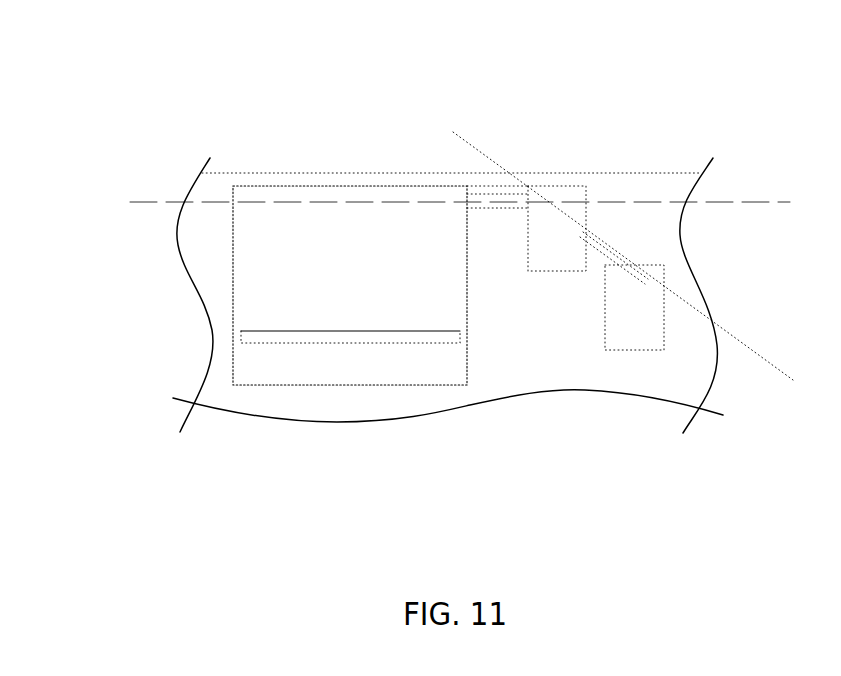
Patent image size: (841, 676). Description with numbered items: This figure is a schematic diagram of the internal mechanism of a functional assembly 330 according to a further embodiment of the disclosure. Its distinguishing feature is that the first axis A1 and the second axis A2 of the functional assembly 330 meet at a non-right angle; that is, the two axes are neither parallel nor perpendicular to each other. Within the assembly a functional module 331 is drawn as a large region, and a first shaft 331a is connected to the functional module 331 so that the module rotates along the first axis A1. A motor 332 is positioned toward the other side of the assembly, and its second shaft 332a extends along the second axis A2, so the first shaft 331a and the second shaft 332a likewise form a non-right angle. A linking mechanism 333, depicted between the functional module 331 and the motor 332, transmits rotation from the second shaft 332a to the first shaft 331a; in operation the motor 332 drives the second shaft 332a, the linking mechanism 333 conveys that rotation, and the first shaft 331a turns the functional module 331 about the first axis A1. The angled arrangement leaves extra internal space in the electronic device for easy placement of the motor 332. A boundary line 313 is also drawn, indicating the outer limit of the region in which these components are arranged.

The functional assembly 330 is at (62, 62).
The boundary line of housing region 313 is at (370, 173).
The functional module 331 is at (408, 335).
The first shaft 331a is at (511, 197).
The connector 333 is at (580, 195).
The motor 332 is at (623, 340).
The second shaft 332a is at (622, 248).
The first axis A1 is at (773, 202).
The second axis A2 is at (733, 331).